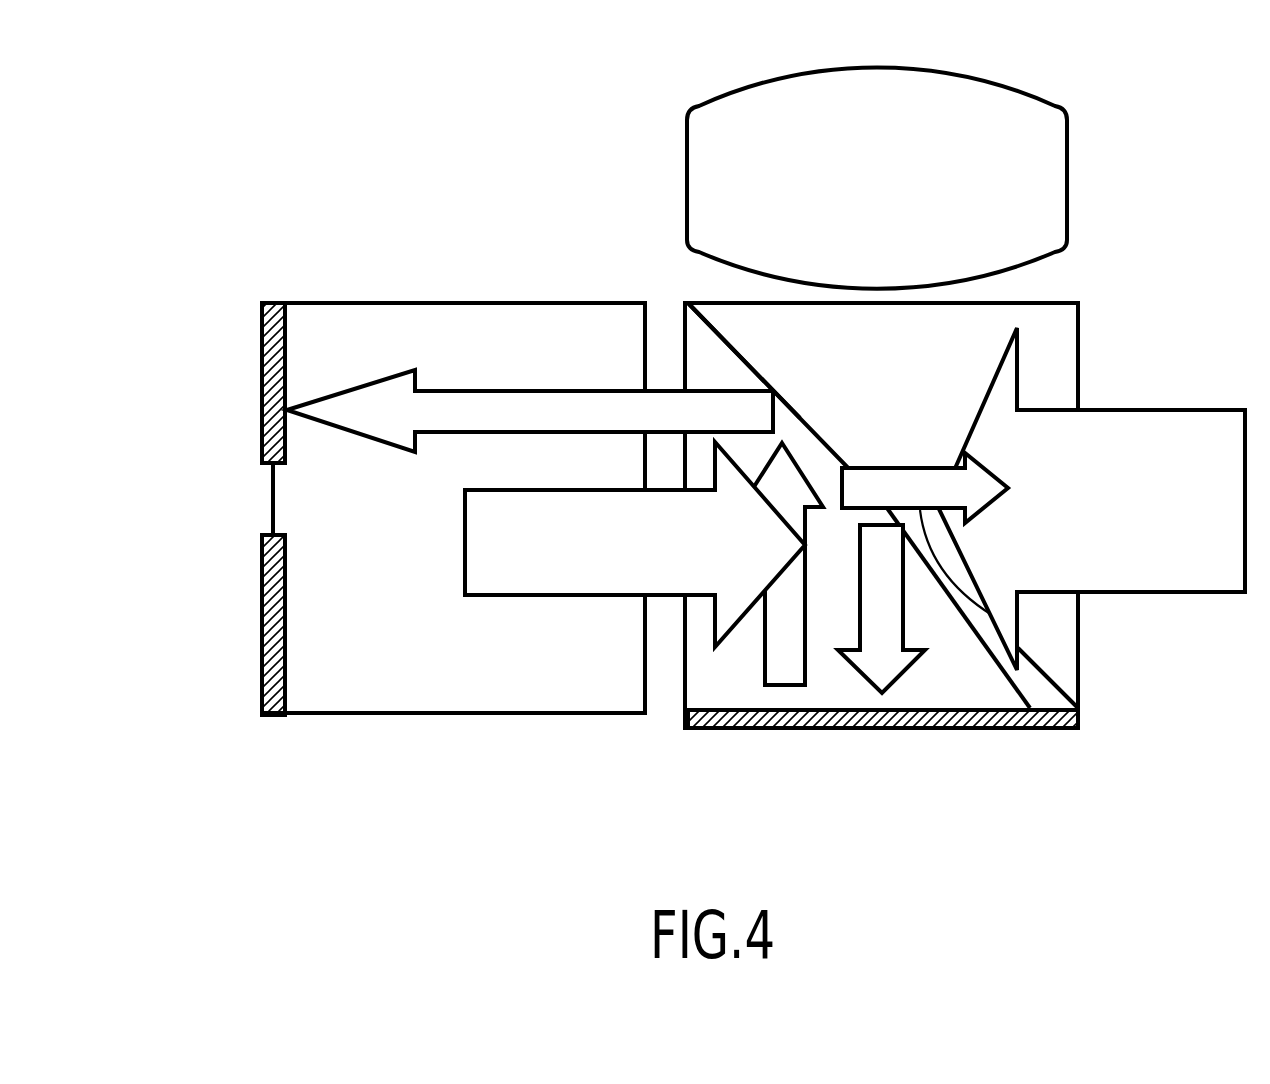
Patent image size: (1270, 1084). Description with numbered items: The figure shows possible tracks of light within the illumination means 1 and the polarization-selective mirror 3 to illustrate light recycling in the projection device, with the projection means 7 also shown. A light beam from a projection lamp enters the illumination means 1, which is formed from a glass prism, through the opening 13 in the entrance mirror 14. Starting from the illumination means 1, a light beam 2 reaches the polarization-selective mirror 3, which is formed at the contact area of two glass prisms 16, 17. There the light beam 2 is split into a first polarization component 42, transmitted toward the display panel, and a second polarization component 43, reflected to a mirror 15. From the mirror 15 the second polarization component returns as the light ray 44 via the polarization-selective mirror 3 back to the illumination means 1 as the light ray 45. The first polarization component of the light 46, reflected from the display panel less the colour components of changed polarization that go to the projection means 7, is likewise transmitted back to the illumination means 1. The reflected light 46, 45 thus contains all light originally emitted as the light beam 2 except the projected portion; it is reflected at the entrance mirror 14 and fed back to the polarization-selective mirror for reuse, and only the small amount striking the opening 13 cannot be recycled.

The illumination means 1 is at (351, 292).
The light beam 2 is at (518, 570).
The polarization-selective mirror 3 is at (822, 408).
The projection means 7 is at (686, 131).
The opening 13 is at (272, 500).
The entrance mirror 14 is at (292, 650).
The mirror 15 is at (698, 733).
The glass prism 16 is at (764, 343).
The glass prism 17 is at (938, 658).
The first polarization component 42 is at (1031, 712).
The second polarization component 43 is at (881, 695).
The light ray 44 is at (780, 687).
The light ray 45 is at (548, 407).
The first polarization component of the light 46 is at (1150, 594).